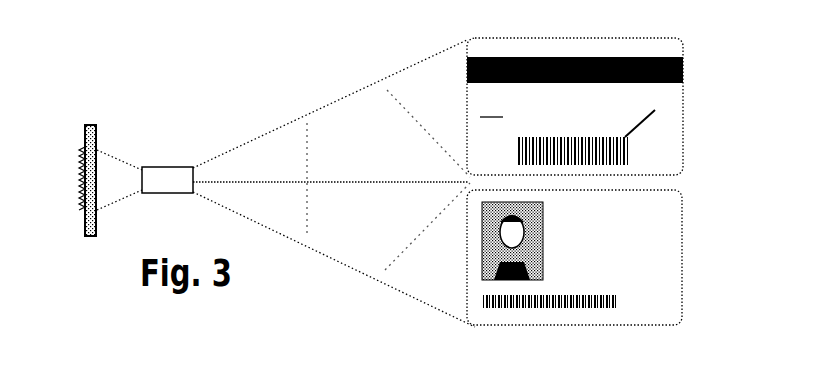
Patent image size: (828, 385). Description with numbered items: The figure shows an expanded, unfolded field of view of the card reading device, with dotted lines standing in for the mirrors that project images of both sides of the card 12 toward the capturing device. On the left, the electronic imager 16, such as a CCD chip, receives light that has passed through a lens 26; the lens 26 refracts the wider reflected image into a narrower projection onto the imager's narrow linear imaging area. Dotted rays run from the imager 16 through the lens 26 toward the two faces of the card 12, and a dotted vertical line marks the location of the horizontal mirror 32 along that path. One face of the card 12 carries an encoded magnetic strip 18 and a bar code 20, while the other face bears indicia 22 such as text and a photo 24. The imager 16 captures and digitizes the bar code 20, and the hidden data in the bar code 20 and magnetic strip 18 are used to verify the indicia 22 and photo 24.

The card 12 is at (575, 87).
The electronic imager 16 is at (89, 126).
The magnetic strip 18 is at (542, 55).
The bar codes 20 is at (588, 264).
The indicia 22 is at (602, 252).
The photo 24 is at (483, 257).
The lens 26 is at (172, 169).
The horizontal mirror 32 is at (297, 0).